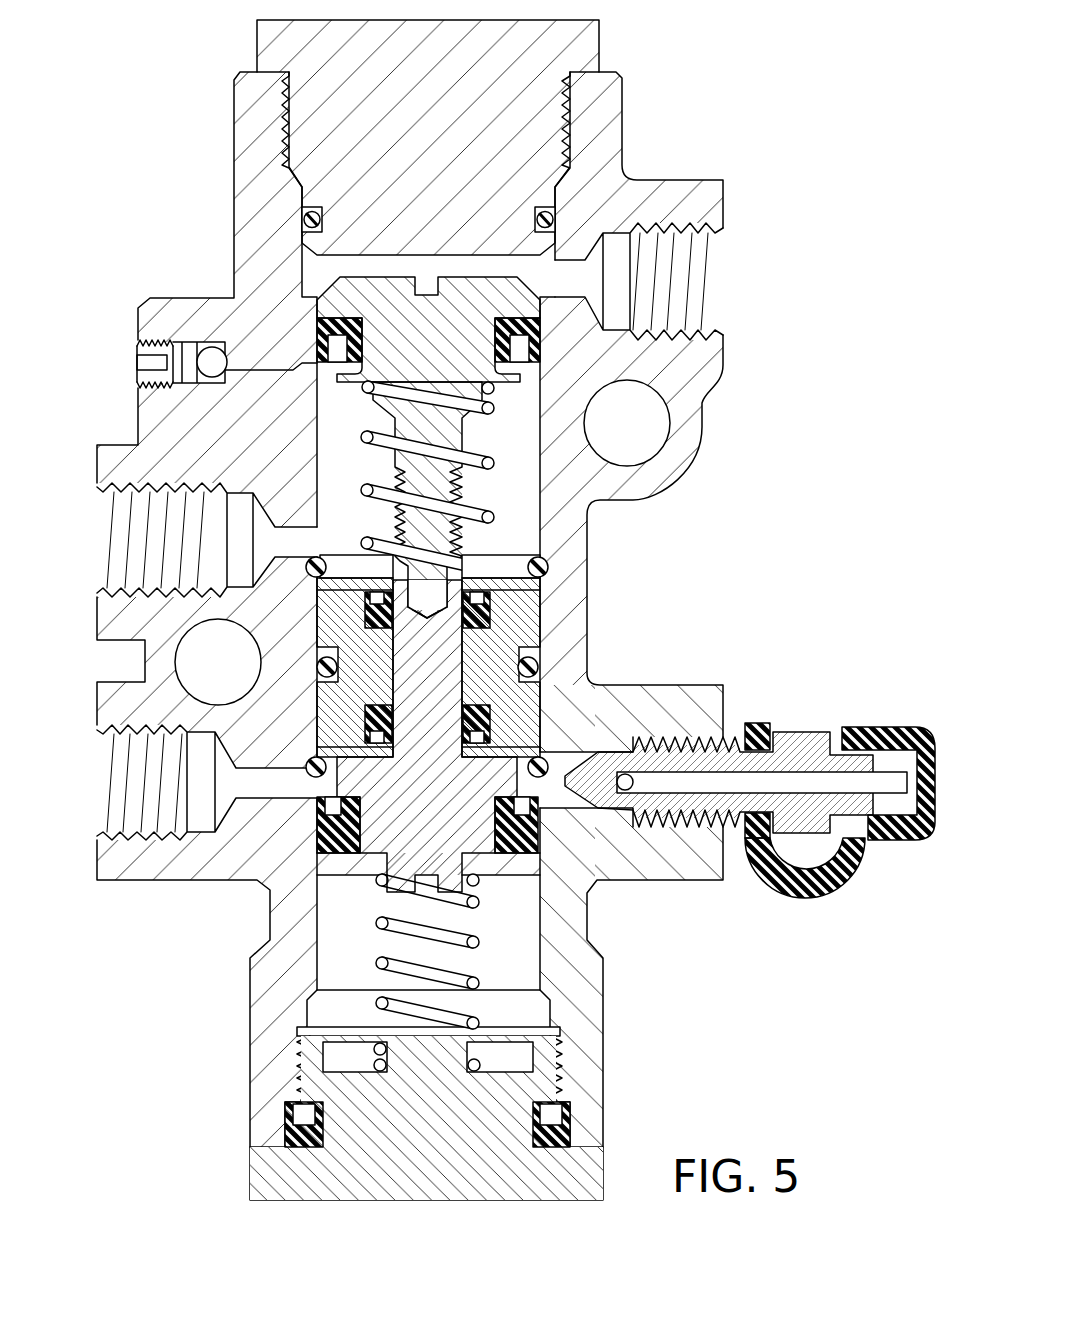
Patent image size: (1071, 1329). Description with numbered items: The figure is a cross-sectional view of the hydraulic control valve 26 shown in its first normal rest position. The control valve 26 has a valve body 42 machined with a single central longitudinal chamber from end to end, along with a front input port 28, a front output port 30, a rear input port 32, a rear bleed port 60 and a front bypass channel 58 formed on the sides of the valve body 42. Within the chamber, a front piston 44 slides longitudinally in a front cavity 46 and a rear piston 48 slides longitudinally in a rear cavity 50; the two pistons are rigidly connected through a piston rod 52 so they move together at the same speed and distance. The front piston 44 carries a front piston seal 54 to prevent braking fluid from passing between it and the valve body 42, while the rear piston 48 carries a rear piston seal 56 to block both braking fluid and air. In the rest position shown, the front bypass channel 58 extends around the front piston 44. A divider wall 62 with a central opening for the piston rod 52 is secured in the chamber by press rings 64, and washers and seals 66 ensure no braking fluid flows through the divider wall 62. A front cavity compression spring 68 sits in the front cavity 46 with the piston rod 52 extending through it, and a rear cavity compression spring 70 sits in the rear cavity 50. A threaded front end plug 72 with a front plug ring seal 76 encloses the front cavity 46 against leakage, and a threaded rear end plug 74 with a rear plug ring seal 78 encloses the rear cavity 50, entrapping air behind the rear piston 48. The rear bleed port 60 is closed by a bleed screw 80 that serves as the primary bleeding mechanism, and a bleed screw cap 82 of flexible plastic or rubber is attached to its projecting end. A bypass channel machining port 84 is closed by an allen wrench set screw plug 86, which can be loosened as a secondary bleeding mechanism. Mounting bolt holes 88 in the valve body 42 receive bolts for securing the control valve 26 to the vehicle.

The control valve 26 is at (166, 108).
The front input port 28 is at (722, 292).
The front output port 30 is at (105, 548).
The rear input port 32 is at (102, 788).
The valve body 42 is at (598, 185).
The front piston 44 is at (340, 298).
The front cavity 46 is at (530, 505).
The rear piston 48 is at (340, 862).
The rear cavity 50 is at (528, 939).
The piston rod 52 is at (540, 612).
The front piston seal 54 is at (530, 337).
The rear piston seal 56 is at (592, 882).
The front bypass channel 58 is at (283, 348).
The rear bleed port 60 is at (553, 787).
The divider wall 62 is at (528, 727).
The press rings 64 is at (445, 703).
The washers and seals 66 is at (540, 560).
The front cavity compression spring 68 is at (367, 435).
The rear cavity compression spring 70 is at (400, 928).
The front end plug 72 is at (583, 48).
The rear end plug 74 is at (590, 1162).
The front plug ring seal 76 is at (555, 222).
The rear plug ring seal 78 is at (570, 1127).
The bleed screw 80 is at (793, 748).
The bleed screw cap 82 is at (878, 835).
The bypass channel machining port 84 is at (245, 362).
The allen wrench set screw plug 86 is at (177, 370).
The mounting bolt holes 88 is at (645, 423).